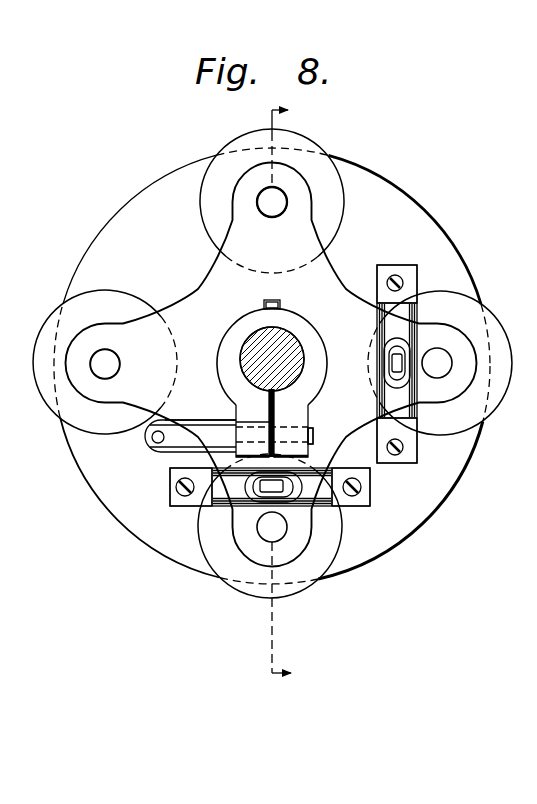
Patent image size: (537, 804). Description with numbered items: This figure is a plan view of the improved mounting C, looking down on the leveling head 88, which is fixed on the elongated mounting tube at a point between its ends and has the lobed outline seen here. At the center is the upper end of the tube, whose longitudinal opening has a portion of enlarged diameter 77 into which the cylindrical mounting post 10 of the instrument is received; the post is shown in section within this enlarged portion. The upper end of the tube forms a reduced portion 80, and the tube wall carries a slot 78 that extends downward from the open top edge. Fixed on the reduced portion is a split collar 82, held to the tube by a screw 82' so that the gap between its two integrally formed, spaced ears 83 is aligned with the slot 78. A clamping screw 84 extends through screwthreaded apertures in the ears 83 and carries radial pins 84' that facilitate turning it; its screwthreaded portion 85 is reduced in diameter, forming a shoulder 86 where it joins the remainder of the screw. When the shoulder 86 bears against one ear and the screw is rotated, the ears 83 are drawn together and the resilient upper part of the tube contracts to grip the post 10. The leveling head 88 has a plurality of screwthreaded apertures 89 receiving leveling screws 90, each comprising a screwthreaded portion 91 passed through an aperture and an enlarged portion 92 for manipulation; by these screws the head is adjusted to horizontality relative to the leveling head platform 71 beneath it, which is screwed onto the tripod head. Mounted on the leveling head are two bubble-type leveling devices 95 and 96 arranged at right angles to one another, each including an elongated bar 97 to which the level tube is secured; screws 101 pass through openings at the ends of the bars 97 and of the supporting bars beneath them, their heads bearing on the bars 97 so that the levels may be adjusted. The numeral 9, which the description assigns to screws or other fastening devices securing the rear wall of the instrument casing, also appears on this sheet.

The screws 9 is at (294, 394).
The mounting post 10 is at (283, 333).
The leveling head platform 71 is at (80, 277).
The portion of enlarged diameter 77 is at (248, 341).
The slot 78 is at (302, 404).
The reduced portion 80 is at (219, 366).
The split collar 82 is at (265, 294).
The screw 82' is at (284, 280).
The ears 83 is at (311, 432).
The clamping screw 84 is at (333, 451).
The radial pins 84' is at (173, 444).
The screwthreaded portion 85 is at (255, 428).
The shoulder 86 is at (186, 421).
The leveling head 88 is at (288, 196).
The screwthreaded apertures 89 is at (258, 196).
The leveling screws 90 is at (257, 206).
The screwthreaded portion 91 is at (300, 188).
The enlarged portion 92 is at (307, 140).
The leveling device 95 is at (368, 504).
The leveling device 96 is at (420, 300).
The elongated bar 97 is at (402, 247).
The screws 101 is at (176, 489).
The mounting C is at (118, 180).